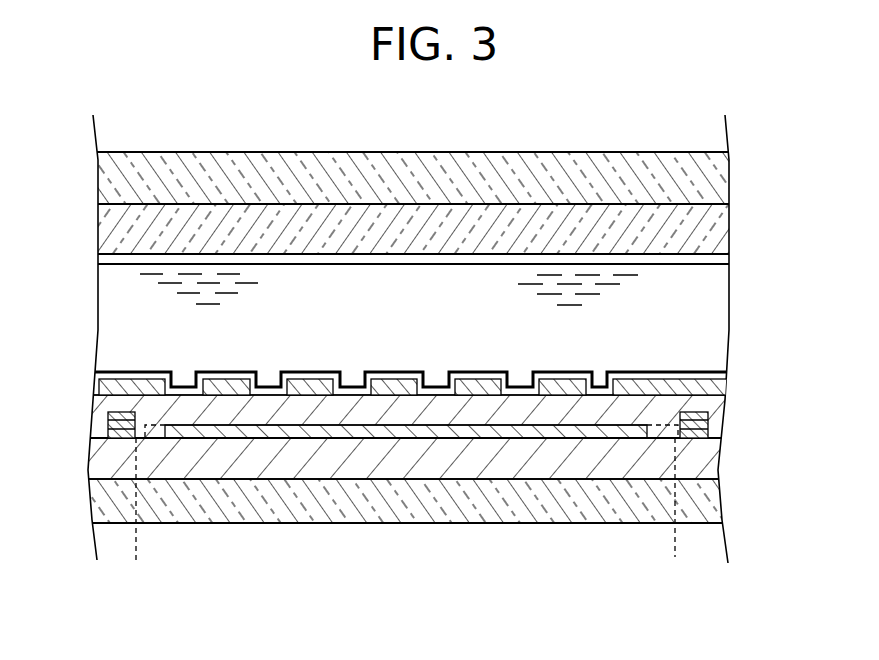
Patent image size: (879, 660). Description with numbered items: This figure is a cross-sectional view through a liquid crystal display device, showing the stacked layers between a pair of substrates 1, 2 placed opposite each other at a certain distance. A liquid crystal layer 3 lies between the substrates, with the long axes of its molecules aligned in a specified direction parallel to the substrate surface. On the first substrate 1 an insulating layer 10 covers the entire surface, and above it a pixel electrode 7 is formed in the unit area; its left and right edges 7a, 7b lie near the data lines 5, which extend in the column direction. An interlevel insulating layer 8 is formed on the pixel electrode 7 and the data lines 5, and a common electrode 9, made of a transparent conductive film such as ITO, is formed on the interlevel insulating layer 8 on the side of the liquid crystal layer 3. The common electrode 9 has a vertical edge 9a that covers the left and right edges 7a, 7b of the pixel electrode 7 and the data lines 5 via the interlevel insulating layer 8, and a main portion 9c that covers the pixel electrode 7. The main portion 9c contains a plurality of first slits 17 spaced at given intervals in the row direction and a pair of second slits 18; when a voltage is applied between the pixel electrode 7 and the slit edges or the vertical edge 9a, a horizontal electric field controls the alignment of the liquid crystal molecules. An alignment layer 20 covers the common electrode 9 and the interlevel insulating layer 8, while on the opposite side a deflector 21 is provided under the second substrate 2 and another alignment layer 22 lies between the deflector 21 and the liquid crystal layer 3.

The first substrate 1 is at (712, 509).
The second substrate 2 is at (718, 181).
The liquid crystal layer 3 is at (715, 299).
The data lines 5 is at (107, 426).
The pixel electrode 7 is at (392, 440).
The left edge of pixel electrode 7a is at (163, 437).
The right edge of pixel electrode 7b is at (653, 440).
The interlevel insulating layer 8 is at (100, 406).
The common electrode 9 is at (389, 359).
The vertical edge 9a is at (130, 383).
The main portion 9c is at (228, 388).
The insulating layer 10 is at (715, 462).
The first slits 17 is at (266, 369).
The second slits 18 is at (182, 369).
The alignment layer 20 is at (720, 374).
The deflector 21 is at (718, 233).
The alignment layer 22 is at (718, 262).